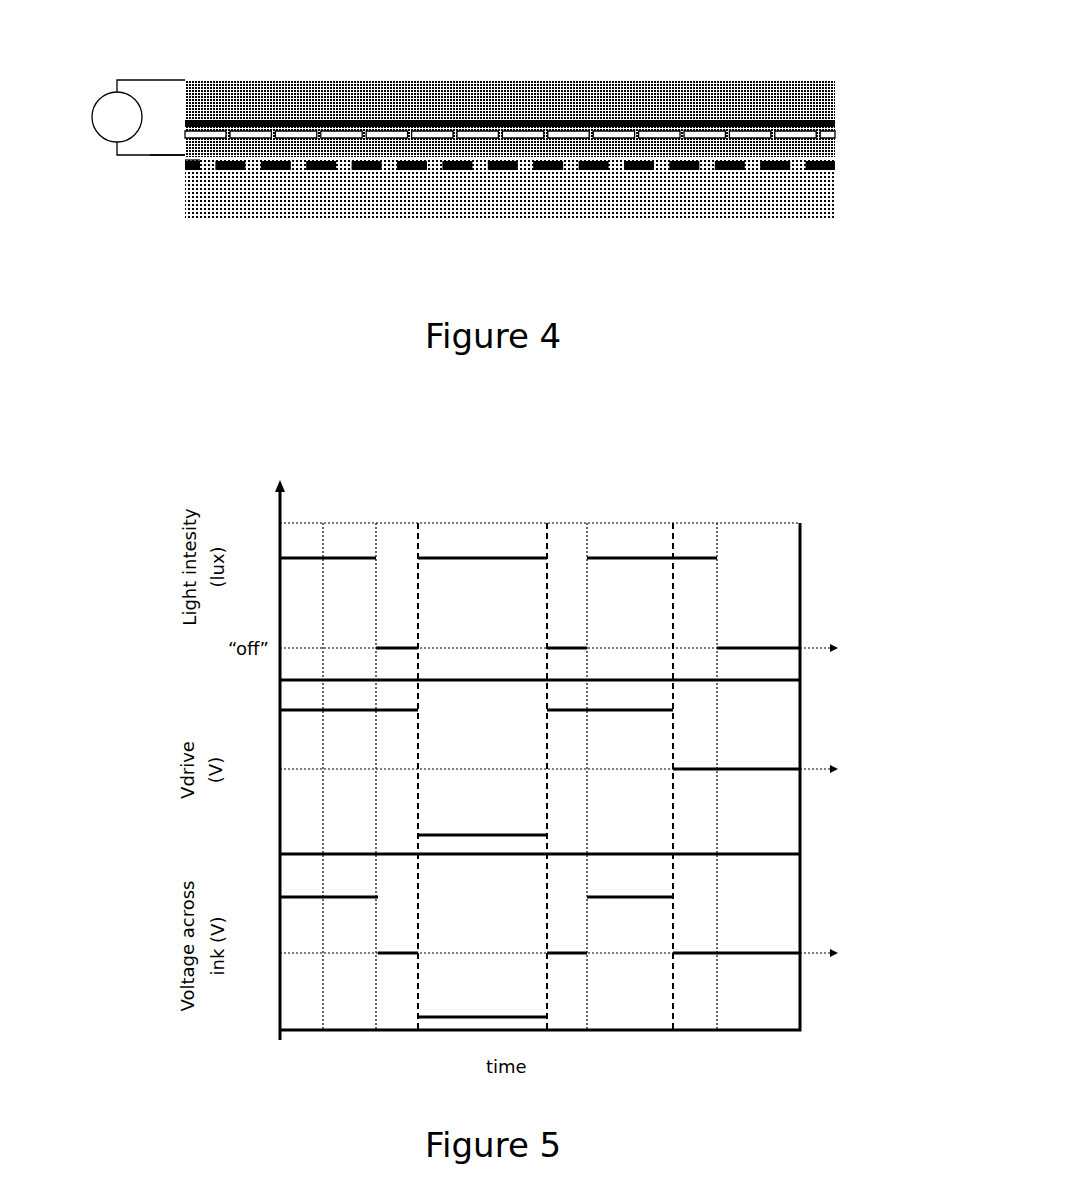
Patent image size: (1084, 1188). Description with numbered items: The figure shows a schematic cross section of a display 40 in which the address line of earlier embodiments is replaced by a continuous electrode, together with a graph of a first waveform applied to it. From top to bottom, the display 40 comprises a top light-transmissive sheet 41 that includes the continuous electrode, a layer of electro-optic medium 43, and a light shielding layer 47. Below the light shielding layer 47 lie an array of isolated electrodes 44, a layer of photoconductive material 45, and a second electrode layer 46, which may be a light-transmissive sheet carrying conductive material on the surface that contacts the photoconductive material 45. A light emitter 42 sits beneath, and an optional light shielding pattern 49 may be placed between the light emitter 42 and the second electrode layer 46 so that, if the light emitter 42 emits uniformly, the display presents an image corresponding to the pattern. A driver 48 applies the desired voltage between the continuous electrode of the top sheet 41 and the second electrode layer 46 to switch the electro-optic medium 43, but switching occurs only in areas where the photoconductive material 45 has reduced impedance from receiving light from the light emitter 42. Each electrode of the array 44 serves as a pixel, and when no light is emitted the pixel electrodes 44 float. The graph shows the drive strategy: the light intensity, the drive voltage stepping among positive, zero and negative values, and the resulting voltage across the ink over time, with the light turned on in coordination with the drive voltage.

The display 40 is at (502, 137).
The top light-transmissive sheet 41 is at (832, 80).
The light emitter 42 is at (835, 200).
The layer of electro-optic medium 43 is at (835, 105).
The array of isolated electrodes 44 is at (835, 132).
The layer of photoconductive material 45 is at (835, 147).
The second electrode layer 46 is at (185, 159).
The light shielding layer 47 is at (835, 125).
The driver 48 is at (105, 92).
The light shielding pattern 49 is at (185, 163).